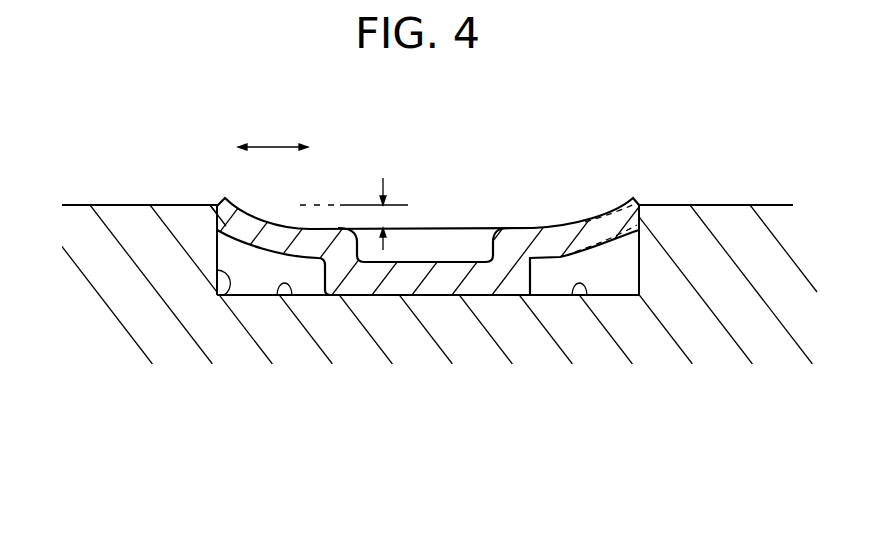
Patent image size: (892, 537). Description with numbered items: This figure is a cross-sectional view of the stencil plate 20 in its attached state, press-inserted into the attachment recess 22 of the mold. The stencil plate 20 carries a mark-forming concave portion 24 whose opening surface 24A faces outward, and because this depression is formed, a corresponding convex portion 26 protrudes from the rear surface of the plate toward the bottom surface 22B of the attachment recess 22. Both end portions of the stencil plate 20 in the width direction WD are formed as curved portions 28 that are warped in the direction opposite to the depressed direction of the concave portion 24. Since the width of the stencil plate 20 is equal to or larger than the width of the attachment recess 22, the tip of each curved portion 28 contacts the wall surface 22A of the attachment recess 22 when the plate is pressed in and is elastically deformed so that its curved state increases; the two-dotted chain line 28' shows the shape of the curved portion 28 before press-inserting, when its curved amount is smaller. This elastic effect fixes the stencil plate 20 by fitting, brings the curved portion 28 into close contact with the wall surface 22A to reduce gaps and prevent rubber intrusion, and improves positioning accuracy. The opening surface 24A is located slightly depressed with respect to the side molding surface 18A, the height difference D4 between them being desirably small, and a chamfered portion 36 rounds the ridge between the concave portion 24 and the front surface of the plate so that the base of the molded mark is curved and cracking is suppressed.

The side molding surface 18A is at (113, 207).
The stencil plate 20 is at (432, 189).
The attachment recess 22 is at (395, 322).
The wall surface 22A is at (223, 295).
The bottom surface 22B is at (279, 295).
The concave portion 24 is at (463, 262).
The opening surface 24A is at (432, 227).
The convex portion 26 is at (420, 295).
The curved portion 28 is at (432, 189).
The curved portion before press-inserting 28' is at (671, 187).
The chamfered portion 36 is at (517, 227).
The height difference D4 is at (373, 207).
The width direction WD is at (273, 131).